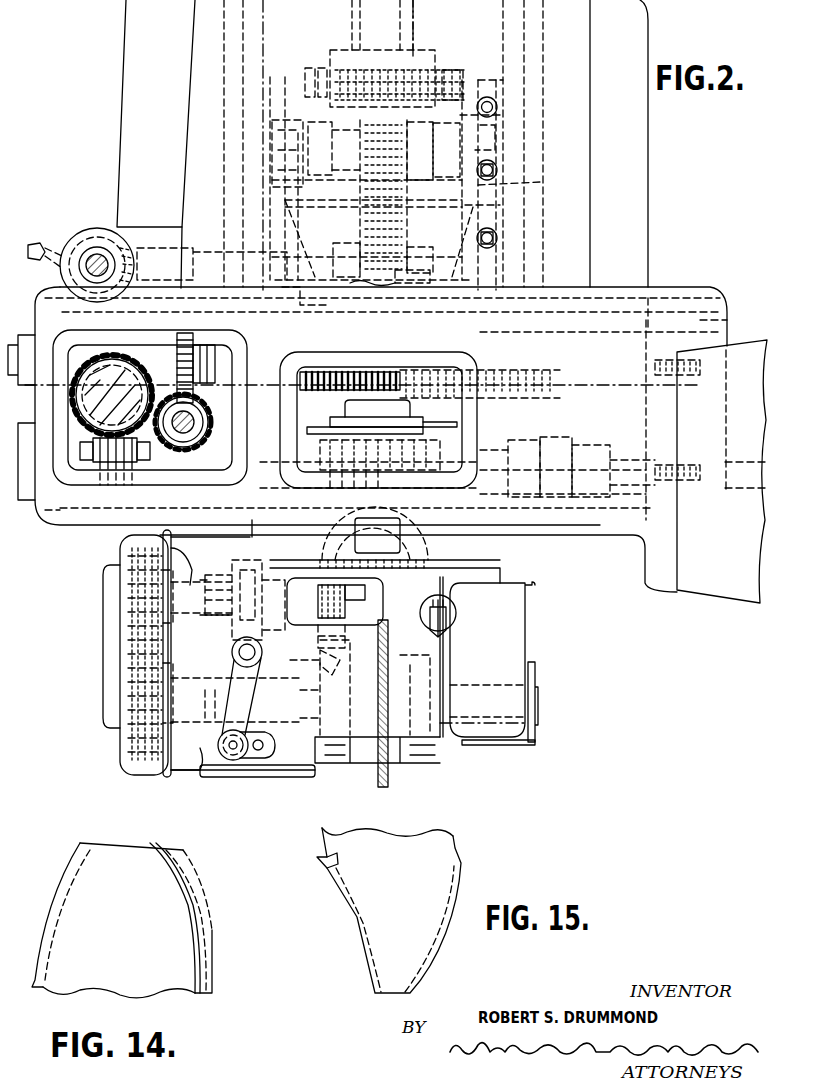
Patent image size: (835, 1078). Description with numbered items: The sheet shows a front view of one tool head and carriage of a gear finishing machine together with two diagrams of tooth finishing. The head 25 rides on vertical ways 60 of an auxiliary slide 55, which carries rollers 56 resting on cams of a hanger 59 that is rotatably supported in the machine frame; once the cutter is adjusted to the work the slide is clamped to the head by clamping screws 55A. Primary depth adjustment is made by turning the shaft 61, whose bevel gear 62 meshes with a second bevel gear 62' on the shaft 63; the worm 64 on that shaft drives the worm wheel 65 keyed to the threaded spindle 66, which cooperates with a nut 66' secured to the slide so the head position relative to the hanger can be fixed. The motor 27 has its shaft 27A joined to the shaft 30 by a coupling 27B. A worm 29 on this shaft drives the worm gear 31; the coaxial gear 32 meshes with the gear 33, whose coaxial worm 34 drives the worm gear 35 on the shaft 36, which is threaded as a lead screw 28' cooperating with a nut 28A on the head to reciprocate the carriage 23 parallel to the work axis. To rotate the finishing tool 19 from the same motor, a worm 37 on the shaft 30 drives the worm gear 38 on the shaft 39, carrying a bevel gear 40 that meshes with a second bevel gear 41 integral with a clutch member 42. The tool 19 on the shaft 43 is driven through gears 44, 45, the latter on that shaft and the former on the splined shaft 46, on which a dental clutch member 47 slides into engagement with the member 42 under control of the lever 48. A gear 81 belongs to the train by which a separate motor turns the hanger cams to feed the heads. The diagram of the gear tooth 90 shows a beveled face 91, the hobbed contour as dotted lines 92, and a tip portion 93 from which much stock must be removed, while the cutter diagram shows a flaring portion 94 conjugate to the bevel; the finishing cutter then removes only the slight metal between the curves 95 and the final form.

In FIG. 2, the finishing tool 19 is at (387, 781).
In FIG. 2, the carriage 23 is at (675, 300).
In FIG. 2, the head 25 is at (197, 62).
In FIG. 2, the motor 27 is at (717, 592).
In FIG. 2, the shaft 27A is at (745, 492).
In FIG. 2, the coupling 27B is at (567, 442).
In FIG. 2, the lead screw 28' is at (434, 367).
In FIG. 2, the nut 28A is at (452, 409).
In FIG. 2, the worm 29 is at (120, 485).
In FIG. 2, the shaft 30 is at (212, 462).
In FIG. 2, the worm gear 31 is at (86, 350).
In FIG. 2, the gear 32 is at (112, 395).
In FIG. 2, the gear 33 is at (205, 440).
In FIG. 2, the worm 34 is at (205, 426).
In FIG. 2, the worm gear 35 is at (185, 333).
In FIG. 2, the shaft 36 is at (274, 362).
In FIG. 2, the worm 37 is at (406, 500).
In FIG. 2, the worm gear 38 is at (305, 490).
In FIG. 2, the shaft 39 is at (418, 568).
In FIG. 2, the bevel gear 40 is at (352, 626).
In FIG. 2, the bevel gear 41 is at (330, 650).
In FIG. 2, the clutch member 42 is at (257, 686).
In FIG. 2, the shaft 43 is at (278, 768).
In FIG. 2, the gear 44 is at (118, 581).
In FIG. 2, the gear 45 is at (118, 695).
In FIG. 2, the splined shaft 46 is at (198, 610).
In FIG. 2, the dental clutch member 47 is at (252, 565).
In FIG. 2, the lever 48 is at (249, 735).
In FIG. 2, the auxiliary slide 55 is at (481, 210).
In FIG. 2, the clamping screws 55A is at (497, 103).
In FIG. 2, the rollers 56 is at (334, 148).
In FIG. 2, the hanger 59 is at (405, 34).
In FIG. 2, the vertical ways 60 is at (506, 184).
In FIG. 2, the shaft 61 is at (93, 256).
In FIG. 2, the bevel gear 62 is at (81, 247).
In FIG. 2, the bevel gear 62' is at (103, 175).
In FIG. 2, the shaft 63 is at (207, 238).
In FIG. 2, the worm 64 is at (399, 300).
In FIG. 2, the worm wheel 65 is at (423, 283).
In FIG. 2, the threaded spindle 66 is at (431, 151).
In FIG. 2, the nut 66' is at (393, 246).
In FIG. 2, the gear 81 is at (441, 70).
In FIG. 14, the gear tooth 90 is at (113, 920).
In FIG. 14, the beveled face 91 is at (176, 889).
In FIG. 14, the dotted lines 92 is at (58, 881).
In FIG. 14, the tip portion 93 is at (187, 868).
In FIG. 15, the flaring portion 94 is at (327, 866).
In FIG. 14, the curves 95 is at (80, 857).